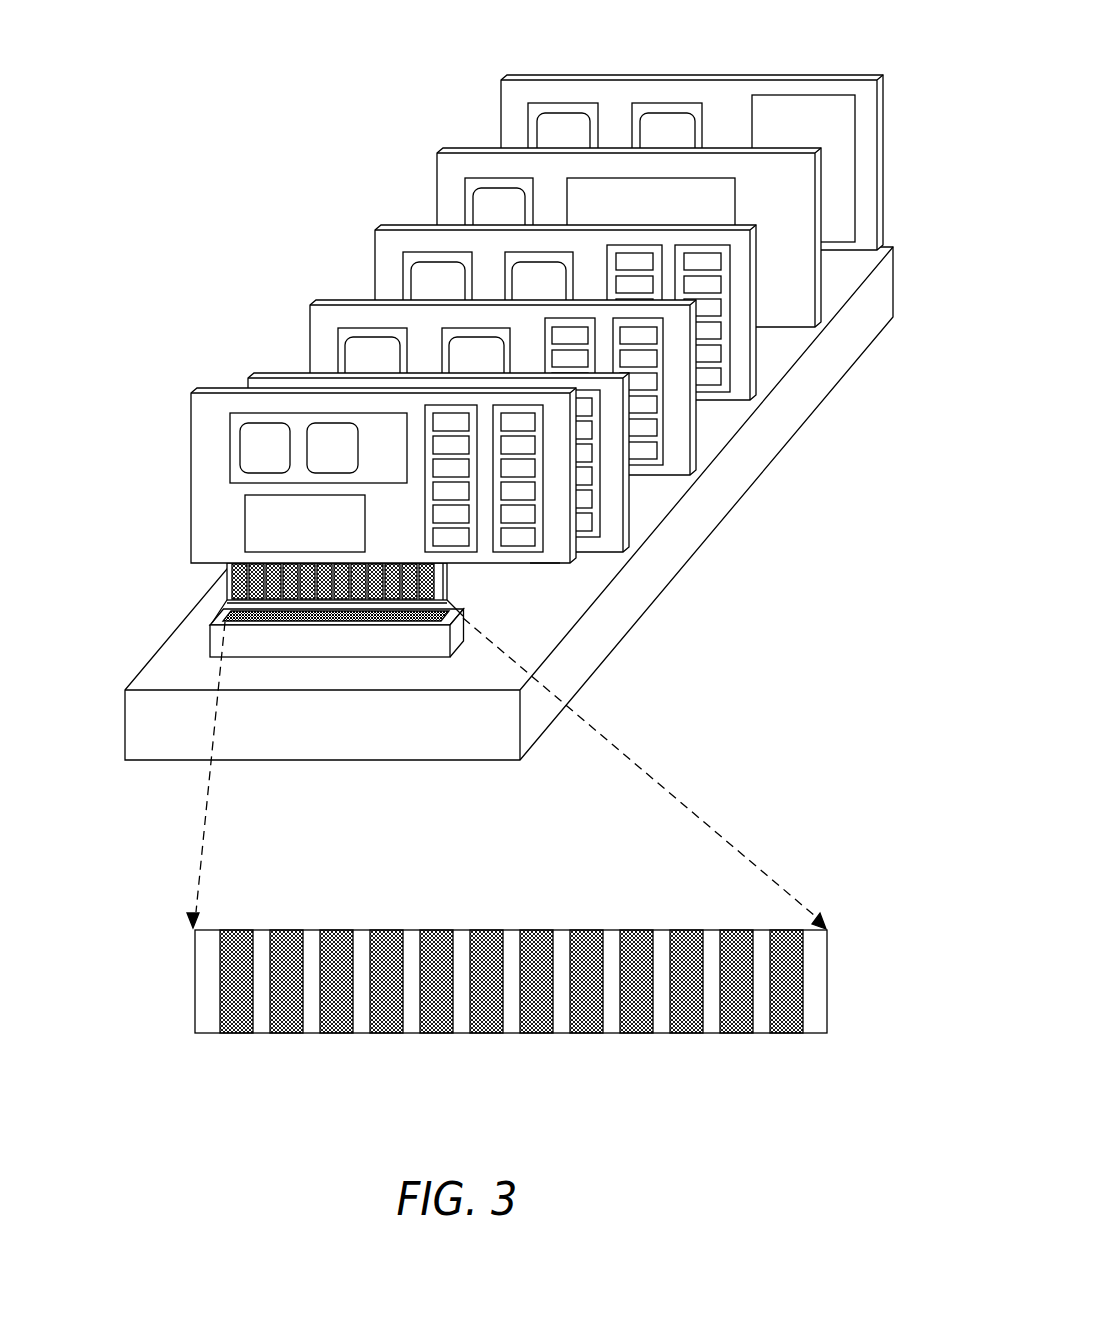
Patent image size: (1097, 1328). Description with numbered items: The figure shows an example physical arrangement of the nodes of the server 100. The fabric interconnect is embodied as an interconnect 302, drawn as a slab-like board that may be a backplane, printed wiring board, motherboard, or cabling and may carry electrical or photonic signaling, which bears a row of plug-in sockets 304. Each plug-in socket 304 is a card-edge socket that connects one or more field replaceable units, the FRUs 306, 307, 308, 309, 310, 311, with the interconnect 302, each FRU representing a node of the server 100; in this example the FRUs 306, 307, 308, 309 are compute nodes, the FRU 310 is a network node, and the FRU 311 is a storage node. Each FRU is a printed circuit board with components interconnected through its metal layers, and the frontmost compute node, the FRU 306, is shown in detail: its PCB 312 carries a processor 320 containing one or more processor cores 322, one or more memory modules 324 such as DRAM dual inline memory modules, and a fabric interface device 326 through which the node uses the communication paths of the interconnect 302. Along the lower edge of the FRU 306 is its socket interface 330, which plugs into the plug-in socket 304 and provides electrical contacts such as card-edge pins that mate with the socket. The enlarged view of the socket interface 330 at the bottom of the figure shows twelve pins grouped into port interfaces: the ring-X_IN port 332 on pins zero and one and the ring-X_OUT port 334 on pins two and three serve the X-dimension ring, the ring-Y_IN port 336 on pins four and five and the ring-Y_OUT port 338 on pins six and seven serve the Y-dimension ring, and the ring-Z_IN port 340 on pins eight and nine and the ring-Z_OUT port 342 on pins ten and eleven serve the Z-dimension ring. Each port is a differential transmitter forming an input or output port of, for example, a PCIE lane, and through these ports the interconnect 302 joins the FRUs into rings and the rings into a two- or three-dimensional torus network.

The server 100 is at (223, 170).
The interconnect 302 is at (125, 730).
The plug-in socket 304 is at (210, 640).
The FRU 306 is at (382, 471).
The FRU 307 is at (250, 378).
The FRU 308 is at (312, 305).
The FRU 309 is at (375, 230).
The FRU 310 is at (437, 153).
The FRU 311 is at (502, 79).
The PCB 312 is at (547, 564).
The processor 320 is at (398, 475).
The processor core 322 is at (251, 458).
The memory module 324 is at (425, 538).
The fabric interface device 326 is at (245, 535).
The socket interface 330 is at (444, 590).
The ring-X_IN port 332 is at (261, 967).
The ring-X_OUT port 334 is at (361, 967).
The ring-Y_IN port 336 is at (461, 967).
The ring-Y_OUT port 338 is at (561, 967).
The ring-Z_IN port 340 is at (661, 967).
The ring-Z_OUT port 342 is at (761, 967).